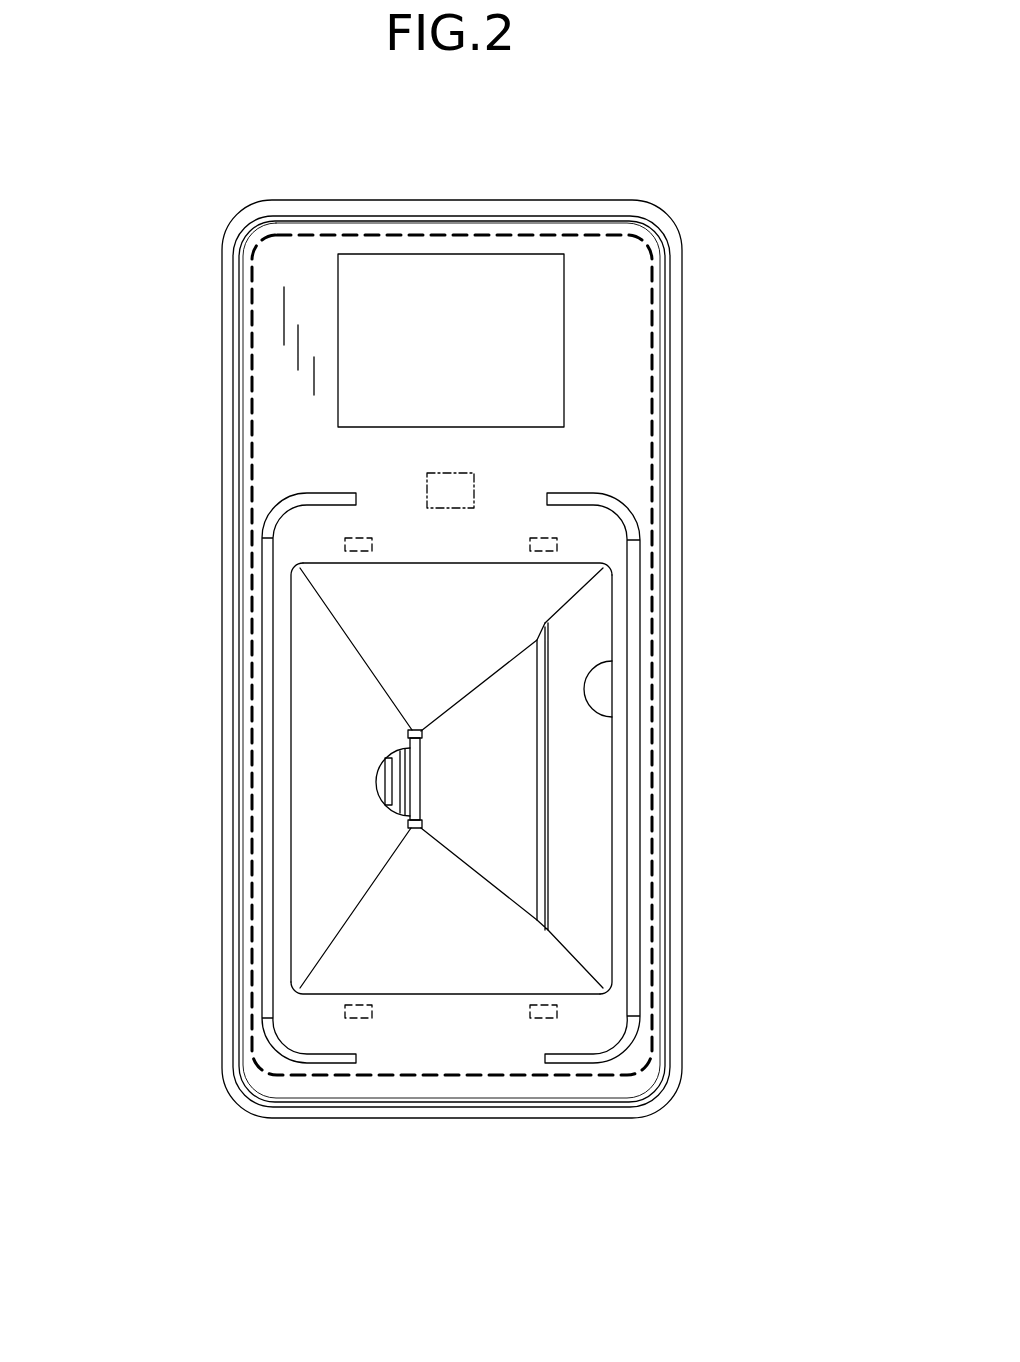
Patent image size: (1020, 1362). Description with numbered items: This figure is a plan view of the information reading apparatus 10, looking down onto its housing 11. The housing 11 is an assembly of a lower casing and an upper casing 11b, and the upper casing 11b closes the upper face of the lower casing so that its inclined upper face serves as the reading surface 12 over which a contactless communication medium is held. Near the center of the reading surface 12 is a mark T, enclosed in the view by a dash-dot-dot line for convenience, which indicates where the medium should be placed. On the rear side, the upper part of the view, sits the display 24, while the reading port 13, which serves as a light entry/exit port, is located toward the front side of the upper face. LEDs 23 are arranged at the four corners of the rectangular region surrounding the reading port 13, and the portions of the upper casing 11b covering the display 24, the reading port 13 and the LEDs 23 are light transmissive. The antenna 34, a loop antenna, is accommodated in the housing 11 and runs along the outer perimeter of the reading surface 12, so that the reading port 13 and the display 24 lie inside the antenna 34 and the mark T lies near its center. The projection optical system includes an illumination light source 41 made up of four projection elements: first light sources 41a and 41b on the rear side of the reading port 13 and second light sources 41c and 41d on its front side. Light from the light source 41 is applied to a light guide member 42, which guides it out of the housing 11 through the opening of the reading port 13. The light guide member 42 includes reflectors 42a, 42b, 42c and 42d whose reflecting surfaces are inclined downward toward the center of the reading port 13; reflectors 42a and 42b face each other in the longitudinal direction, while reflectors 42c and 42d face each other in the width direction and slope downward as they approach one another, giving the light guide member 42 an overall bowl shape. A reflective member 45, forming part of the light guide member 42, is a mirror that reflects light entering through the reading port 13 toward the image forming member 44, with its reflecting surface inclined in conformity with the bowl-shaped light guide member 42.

The information reading apparatus 10 is at (318, 150).
The housing 11 is at (668, 183).
The upper casing 11b is at (675, 303).
The reading surface 12 is at (370, 475).
The reading port 13 is at (608, 718).
The LEDs 23 is at (285, 508).
The display 24 is at (418, 254).
The antenna 34 is at (255, 318).
The illumination light source 41 is at (450, 789).
The first light source 41a is at (345, 545).
The first light source 41b is at (557, 546).
The second light source 41c is at (345, 1010).
The second light source 41d is at (557, 1012).
The light guide member 42 is at (448, 886).
The reflector 42a is at (410, 653).
The reflector 42b is at (418, 955).
The reflector 42c is at (324, 744).
The reflector 42d is at (584, 892).
The image forming member 44 is at (402, 800).
The reflective member 45 is at (497, 783).
The mark T is at (477, 490).